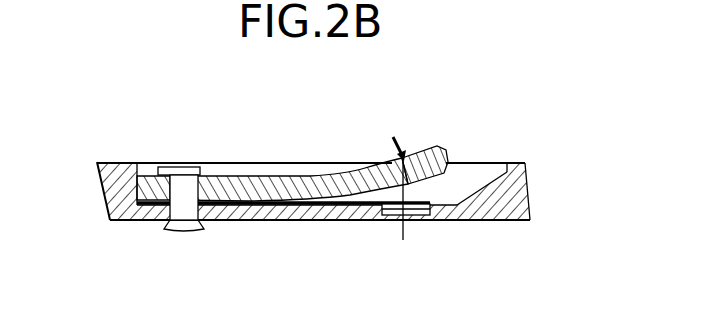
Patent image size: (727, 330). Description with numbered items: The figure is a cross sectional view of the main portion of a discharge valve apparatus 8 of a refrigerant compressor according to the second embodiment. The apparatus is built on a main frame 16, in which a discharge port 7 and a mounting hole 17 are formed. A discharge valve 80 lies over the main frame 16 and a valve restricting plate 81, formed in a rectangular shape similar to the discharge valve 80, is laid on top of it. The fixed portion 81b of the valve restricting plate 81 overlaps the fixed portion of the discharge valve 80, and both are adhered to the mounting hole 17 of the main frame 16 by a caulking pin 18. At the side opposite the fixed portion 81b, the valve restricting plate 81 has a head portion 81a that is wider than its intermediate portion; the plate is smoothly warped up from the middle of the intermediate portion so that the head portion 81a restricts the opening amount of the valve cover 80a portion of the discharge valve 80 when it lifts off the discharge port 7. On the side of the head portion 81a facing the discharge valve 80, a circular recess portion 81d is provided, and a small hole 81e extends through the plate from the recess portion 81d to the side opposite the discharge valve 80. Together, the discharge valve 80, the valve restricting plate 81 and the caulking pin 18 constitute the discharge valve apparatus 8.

The discharge valve apparatus 8 is at (271, 152).
The valve restricting plate 81 is at (310, 176).
The head portion 81a is at (428, 150).
The fixed portion 81b is at (150, 163).
The circular recess portion 81d is at (401, 235).
The small hole 81e is at (402, 160).
The discharge valve 80 is at (343, 221).
The valve cover 80a is at (462, 163).
The discharge port 7 is at (418, 222).
The main frame 16 is at (517, 221).
The mounting hole 17 is at (173, 227).
The caulking pin 18 is at (195, 227).